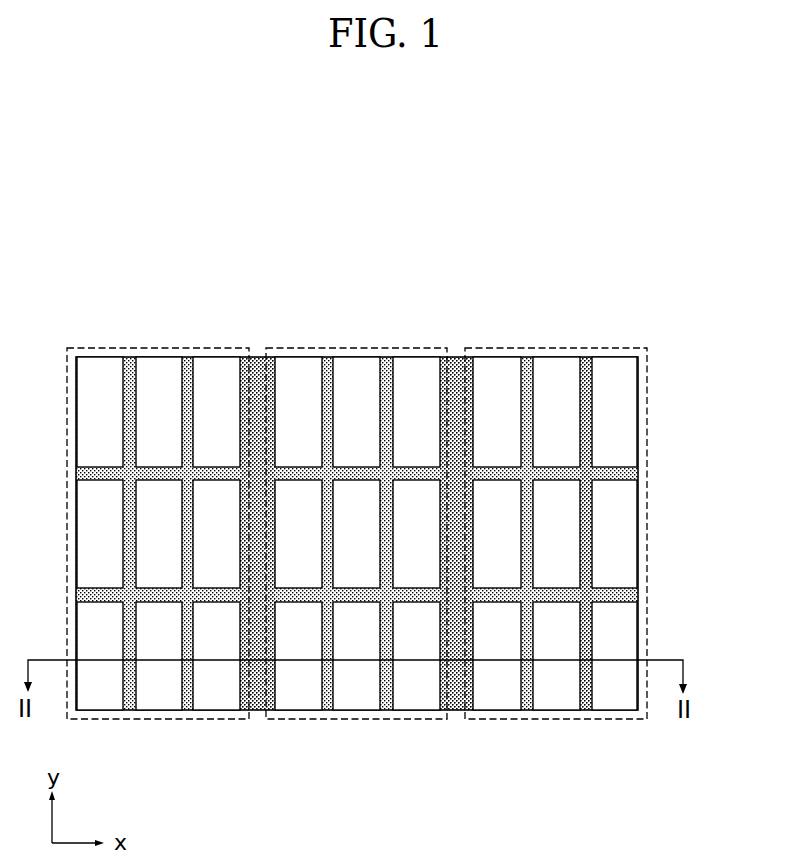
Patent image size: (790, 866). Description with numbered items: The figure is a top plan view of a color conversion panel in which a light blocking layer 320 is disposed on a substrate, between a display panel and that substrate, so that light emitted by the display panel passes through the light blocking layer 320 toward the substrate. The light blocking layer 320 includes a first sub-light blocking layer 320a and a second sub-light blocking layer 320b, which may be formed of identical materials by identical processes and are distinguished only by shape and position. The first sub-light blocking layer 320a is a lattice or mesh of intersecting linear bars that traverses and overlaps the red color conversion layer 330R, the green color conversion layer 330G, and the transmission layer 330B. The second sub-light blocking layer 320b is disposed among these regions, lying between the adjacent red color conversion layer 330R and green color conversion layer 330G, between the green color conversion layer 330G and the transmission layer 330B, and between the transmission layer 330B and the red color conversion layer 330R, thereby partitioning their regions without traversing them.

The light blocking layer 320 is at (610, 297).
The first sub-light blocking layer 320a is at (585, 367).
The second sub-light blocking layer 320b is at (457, 370).
The red color conversion layer 330R is at (157, 347).
The green color conversion layer 330G is at (356, 347).
The transmission layer 330B is at (647, 430).